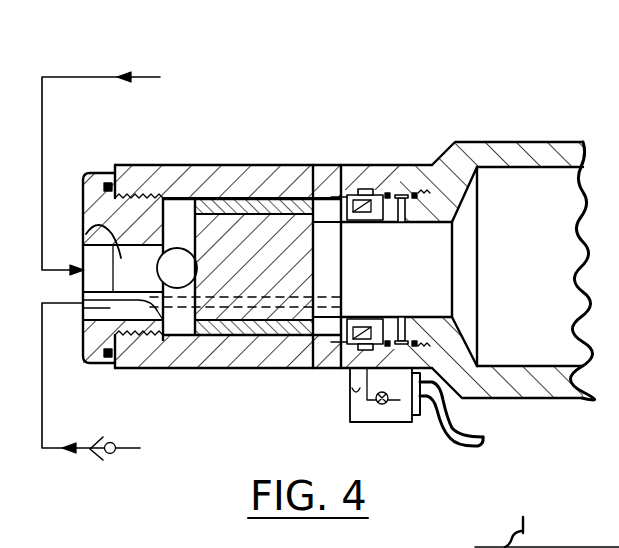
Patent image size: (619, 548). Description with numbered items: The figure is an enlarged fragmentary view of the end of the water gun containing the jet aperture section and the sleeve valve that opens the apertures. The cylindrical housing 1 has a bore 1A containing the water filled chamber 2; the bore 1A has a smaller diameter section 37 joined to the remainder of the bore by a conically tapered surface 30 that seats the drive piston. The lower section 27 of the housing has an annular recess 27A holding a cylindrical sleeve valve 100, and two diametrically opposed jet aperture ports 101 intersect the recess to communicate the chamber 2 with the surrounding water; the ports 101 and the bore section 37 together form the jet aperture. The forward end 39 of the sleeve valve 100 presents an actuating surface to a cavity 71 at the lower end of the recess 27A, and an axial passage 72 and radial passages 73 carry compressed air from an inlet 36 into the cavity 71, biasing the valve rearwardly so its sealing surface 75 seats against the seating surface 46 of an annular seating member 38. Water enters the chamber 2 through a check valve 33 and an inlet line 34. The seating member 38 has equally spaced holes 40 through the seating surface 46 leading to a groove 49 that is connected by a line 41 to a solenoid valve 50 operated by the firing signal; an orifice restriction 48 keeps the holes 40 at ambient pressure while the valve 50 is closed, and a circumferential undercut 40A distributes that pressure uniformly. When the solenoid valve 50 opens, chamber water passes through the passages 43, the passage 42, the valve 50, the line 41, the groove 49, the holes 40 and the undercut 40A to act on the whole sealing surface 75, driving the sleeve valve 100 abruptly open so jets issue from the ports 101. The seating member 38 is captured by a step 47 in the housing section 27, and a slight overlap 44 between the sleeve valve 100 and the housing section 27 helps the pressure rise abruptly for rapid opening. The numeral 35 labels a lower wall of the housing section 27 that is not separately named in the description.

The cylindrical housing 1 is at (465, 142).
The bore 1A is at (570, 366).
The water filled chamber 2 is at (585, 201).
The lower section of the housing 27 is at (253, 165).
The annular recess 27A is at (256, 216).
The conically tapered surface 30 is at (468, 200).
The check valve 33 is at (113, 455).
The inlet line 34 is at (100, 309).
The lower housing wall 35 is at (258, 368).
The inlet for compressed air 36 is at (88, 275).
The smaller diameter section 37 is at (426, 222).
The annular seating member 38 is at (400, 222).
The forward end of the sleeve valve 39 is at (180, 370).
The holes 40 is at (378, 316).
The circumferential undercut 40A is at (343, 224).
The line 41 is at (334, 370).
The passage 42 is at (433, 352).
The passages 43 is at (402, 318).
The overlap 44 is at (318, 370).
The seating surface 46 is at (340, 316).
The step 47 is at (327, 269).
The orifice restriction 48 is at (353, 422).
The groove 49 is at (373, 195).
The solenoid valve 50 is at (383, 405).
The cavity 71 is at (185, 204).
The axial passage 72 is at (86, 234).
The radial passages 73 is at (158, 270).
The sealing surface 75 is at (305, 342).
The cylindrical sleeve valve 100 is at (335, 200).
The jet aperture ports 101 is at (318, 172).